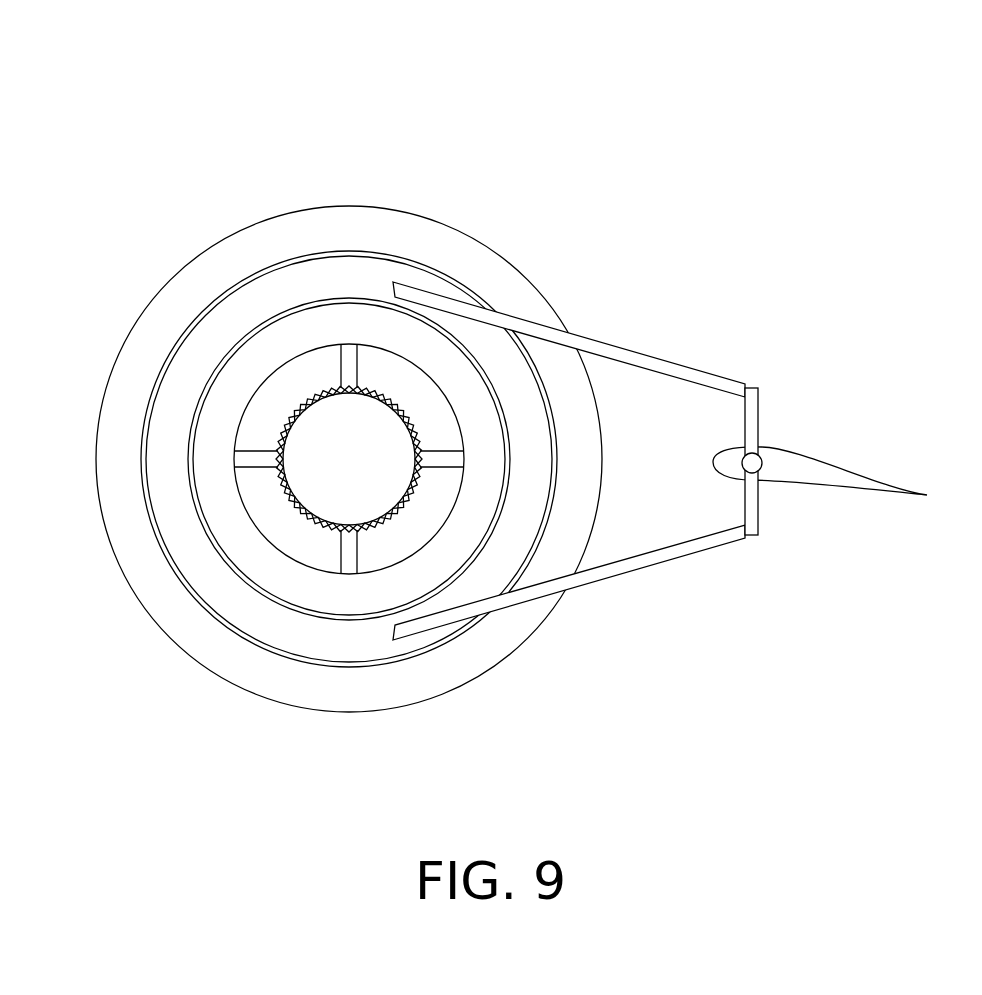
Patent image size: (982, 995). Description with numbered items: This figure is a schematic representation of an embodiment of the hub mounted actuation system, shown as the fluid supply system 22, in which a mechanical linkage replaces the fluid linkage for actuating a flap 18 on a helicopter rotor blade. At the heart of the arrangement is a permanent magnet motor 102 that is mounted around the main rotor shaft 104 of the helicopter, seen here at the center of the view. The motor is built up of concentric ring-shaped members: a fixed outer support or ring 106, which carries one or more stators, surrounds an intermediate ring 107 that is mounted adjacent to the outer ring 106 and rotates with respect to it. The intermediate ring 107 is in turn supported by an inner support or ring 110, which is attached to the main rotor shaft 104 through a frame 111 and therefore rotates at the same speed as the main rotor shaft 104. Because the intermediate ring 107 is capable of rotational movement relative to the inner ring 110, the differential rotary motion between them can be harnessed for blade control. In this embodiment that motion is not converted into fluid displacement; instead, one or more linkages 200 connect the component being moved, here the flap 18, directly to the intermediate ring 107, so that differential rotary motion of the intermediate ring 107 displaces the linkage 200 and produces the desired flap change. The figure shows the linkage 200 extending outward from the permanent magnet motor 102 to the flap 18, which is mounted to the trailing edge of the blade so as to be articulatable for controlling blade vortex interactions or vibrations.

The fluid supply system 22 is at (572, 133).
The permanent magnet motor 102 is at (125, 627).
The main rotor shaft 104 is at (298, 503).
The outer ring 106 is at (222, 258).
The intermediate ring 107 is at (178, 380).
The inner ring 110 is at (475, 397).
The frame 111 is at (253, 455).
The flap 18 is at (825, 470).
The linkage 200 is at (661, 620).